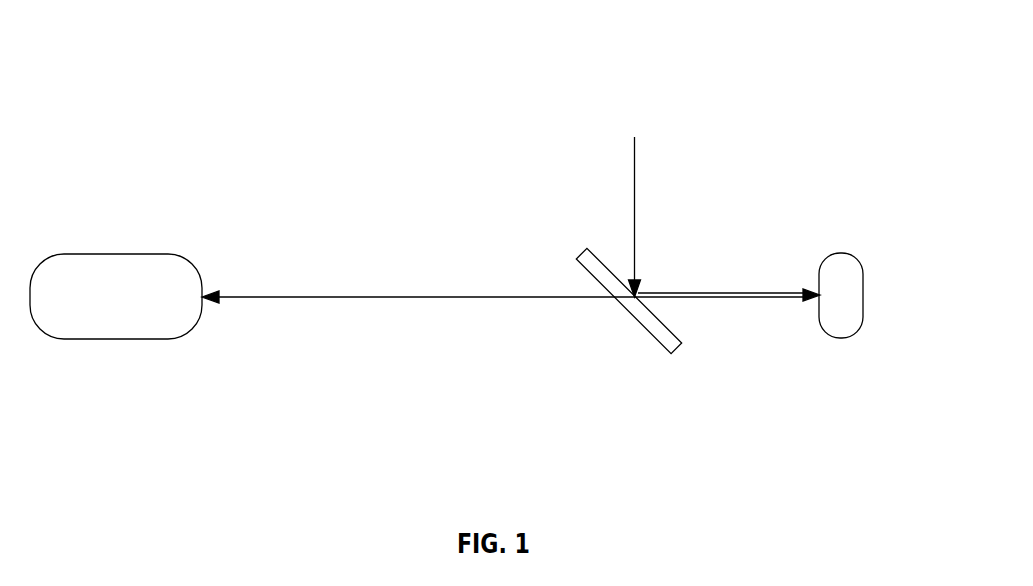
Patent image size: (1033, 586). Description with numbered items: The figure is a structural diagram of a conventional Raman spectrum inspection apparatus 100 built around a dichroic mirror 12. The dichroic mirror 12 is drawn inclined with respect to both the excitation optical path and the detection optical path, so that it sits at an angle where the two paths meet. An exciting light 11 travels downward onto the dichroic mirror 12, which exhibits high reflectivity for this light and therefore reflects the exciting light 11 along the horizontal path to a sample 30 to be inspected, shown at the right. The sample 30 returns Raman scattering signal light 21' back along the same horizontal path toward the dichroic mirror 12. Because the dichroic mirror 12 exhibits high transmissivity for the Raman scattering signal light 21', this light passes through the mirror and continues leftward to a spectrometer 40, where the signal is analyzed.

The Raman spectrum inspection apparatus 100 is at (556, 46).
The exciting light 11 is at (634, 218).
The dichroic mirror 12 is at (642, 323).
The Raman scattering signal light 21' is at (511, 350).
The sample to be inspected 30 is at (863, 273).
The spectrometer 40 is at (165, 253).